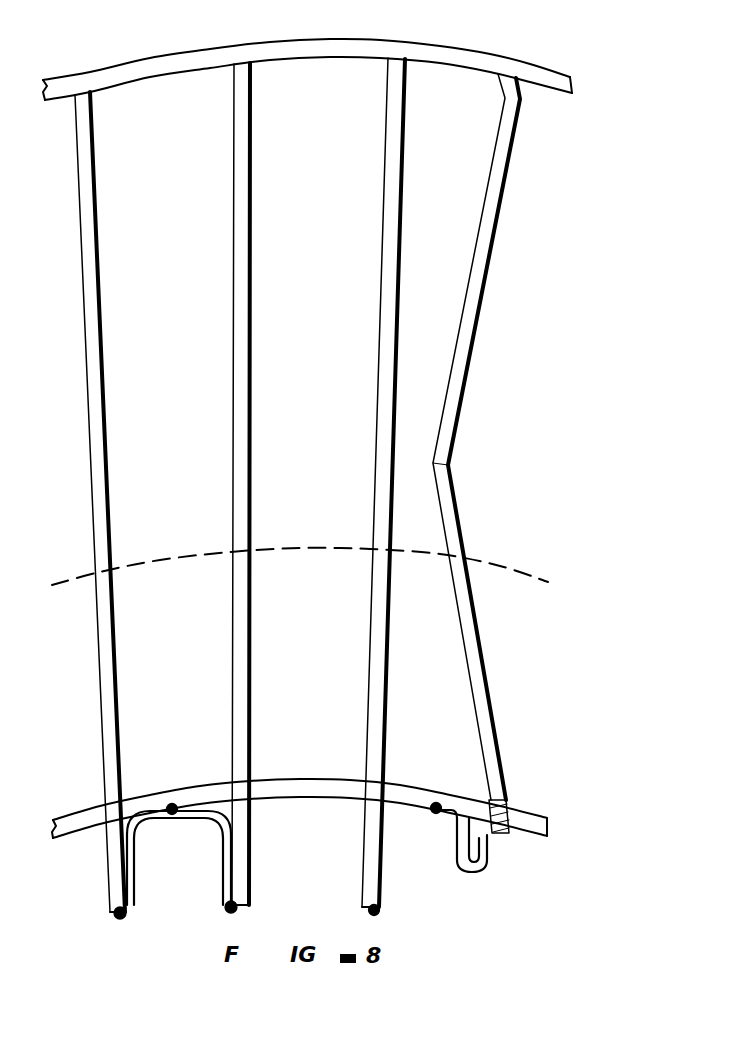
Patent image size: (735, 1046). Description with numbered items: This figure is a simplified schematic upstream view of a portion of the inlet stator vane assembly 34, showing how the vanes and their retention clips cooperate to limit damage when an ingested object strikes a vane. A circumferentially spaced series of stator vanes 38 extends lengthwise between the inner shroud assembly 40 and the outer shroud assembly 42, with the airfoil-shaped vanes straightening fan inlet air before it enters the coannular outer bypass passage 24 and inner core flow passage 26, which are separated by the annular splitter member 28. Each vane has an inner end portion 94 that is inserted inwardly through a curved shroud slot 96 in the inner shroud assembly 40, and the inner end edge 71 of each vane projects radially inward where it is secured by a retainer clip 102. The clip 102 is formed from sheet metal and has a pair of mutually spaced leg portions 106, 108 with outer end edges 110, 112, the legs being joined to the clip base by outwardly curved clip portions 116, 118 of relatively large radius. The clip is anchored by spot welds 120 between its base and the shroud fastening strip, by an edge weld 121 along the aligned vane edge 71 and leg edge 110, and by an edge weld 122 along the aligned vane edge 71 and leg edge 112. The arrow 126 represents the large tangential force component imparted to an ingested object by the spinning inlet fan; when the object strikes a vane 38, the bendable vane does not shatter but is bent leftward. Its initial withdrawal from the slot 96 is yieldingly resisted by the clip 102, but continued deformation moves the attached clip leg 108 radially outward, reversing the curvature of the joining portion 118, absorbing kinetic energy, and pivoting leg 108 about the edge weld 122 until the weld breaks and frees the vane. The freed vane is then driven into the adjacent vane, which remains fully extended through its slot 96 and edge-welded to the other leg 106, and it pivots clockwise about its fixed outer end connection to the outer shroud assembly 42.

The outer bypass flow passage 24 is at (320, 309).
The inner core flow passage 26 is at (317, 682).
The annular splitter member 28 is at (288, 546).
The inlet stator vane assembly 34 is at (322, 468).
The stator vane 38 is at (112, 190).
The inner shroud assembly 40 is at (540, 806).
The outer shroud assembly 42 is at (494, 49).
The inner end edge of vane 71 is at (118, 907).
The inner end portion of vane 94 is at (115, 883).
The shroud slot 96 is at (104, 812).
The retainer clip 102 is at (200, 850).
The clip leg 106 is at (128, 860).
The clip leg 108 is at (233, 860).
The outer end edge of clip leg 110 is at (133, 900).
The outer end edge of clip leg 112 is at (225, 895).
The outwardly curved clip portion 116 is at (130, 826).
The outwardly curved clip portion 118 is at (210, 823).
The spot weld 120 is at (172, 806).
The edge weld 121 is at (118, 918).
The edge weld 122 is at (225, 910).
The tangential force component 126 is at (465, 465).